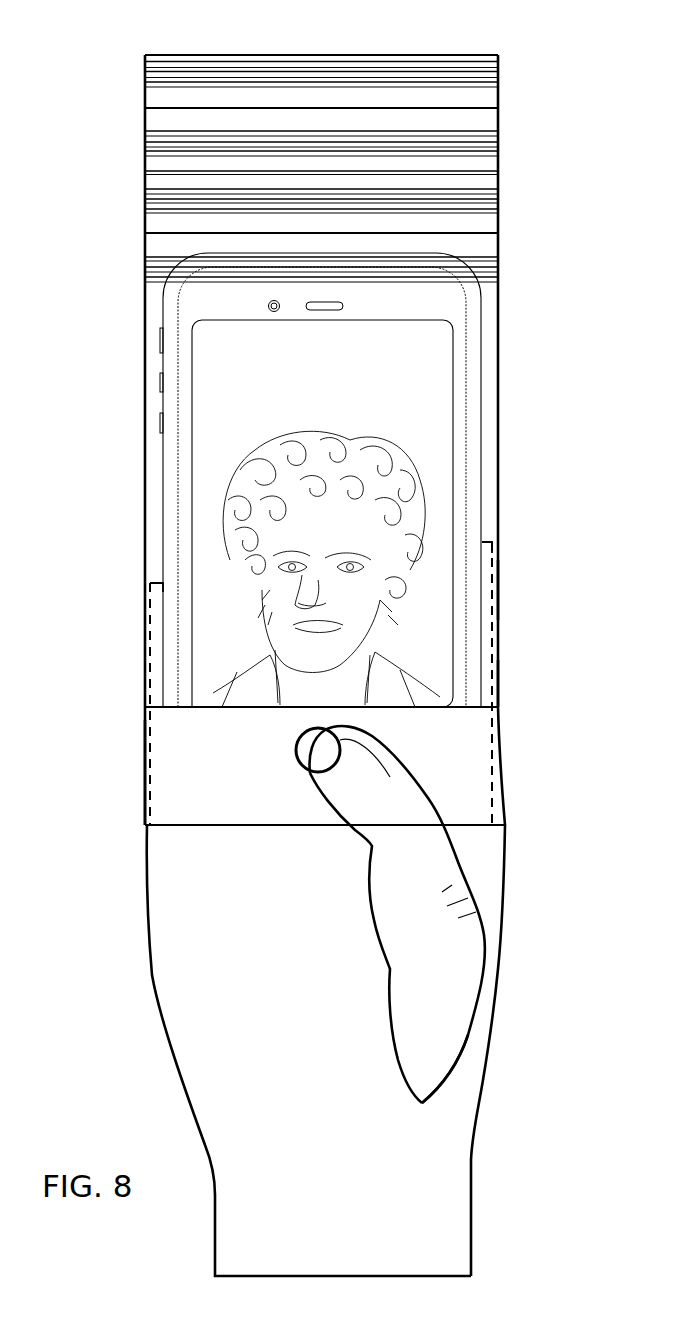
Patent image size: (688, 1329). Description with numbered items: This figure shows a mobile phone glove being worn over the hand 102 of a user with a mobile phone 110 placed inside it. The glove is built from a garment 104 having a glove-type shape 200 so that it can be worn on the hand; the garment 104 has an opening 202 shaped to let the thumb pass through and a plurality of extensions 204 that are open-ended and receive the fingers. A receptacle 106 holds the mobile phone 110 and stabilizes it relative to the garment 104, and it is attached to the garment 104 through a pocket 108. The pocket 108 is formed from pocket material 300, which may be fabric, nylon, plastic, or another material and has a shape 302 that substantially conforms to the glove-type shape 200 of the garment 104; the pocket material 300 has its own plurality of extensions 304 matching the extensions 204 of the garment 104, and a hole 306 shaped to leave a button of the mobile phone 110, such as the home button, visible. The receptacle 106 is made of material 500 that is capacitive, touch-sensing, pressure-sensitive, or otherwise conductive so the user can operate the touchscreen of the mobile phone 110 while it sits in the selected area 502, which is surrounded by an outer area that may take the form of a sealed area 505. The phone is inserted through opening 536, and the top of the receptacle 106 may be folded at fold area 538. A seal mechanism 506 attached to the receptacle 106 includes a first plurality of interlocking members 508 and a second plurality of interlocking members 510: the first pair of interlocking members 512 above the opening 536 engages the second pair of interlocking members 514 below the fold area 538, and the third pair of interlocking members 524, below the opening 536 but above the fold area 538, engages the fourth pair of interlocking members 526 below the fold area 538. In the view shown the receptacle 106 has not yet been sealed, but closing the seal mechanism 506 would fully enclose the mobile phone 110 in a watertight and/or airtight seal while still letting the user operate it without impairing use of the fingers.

The hand 102 is at (422, 914).
The garment 104 is at (456, 1143).
The receptacle 106 is at (327, 472).
The pocket 108 is at (149, 750).
The mobile phone 110 is at (420, 476).
The glove-type shape 200 is at (345, 1050).
The opening 202 is at (448, 1064).
The plurality of extensions 204 is at (508, 592).
The pocket material 300 is at (482, 741).
The shape 302 is at (494, 782).
The plurality of extensions 304 is at (508, 687).
The hole 306 is at (294, 760).
The material 500 is at (319, 414).
The selected area 502 is at (181, 402).
The sealed area 505 is at (449, 296).
The seal mechanism 506 is at (164, 61).
The first plurality of interlocking members 508 is at (231, 61).
The second plurality of interlocking members 510 is at (473, 193).
The first pair of interlocking members 512 is at (144, 70).
The second pair of interlocking members 514 is at (144, 267).
The third pair of interlocking members 524 is at (144, 133).
The fourth pair of interlocking members 526 is at (144, 200).
The opening 536 is at (473, 106).
The fold area 538 is at (167, 170).